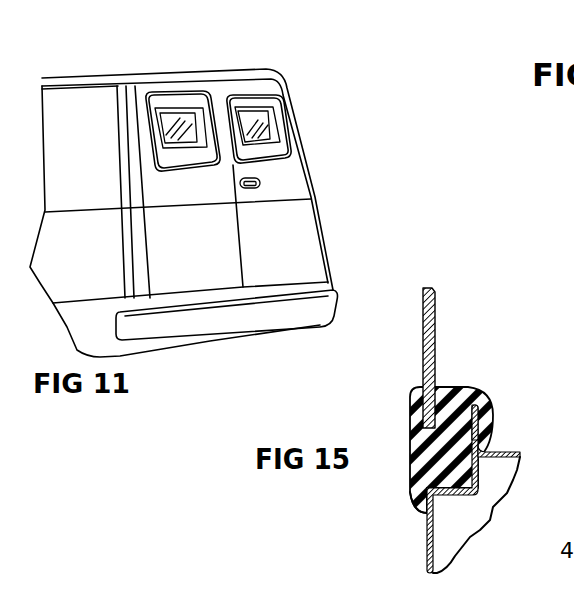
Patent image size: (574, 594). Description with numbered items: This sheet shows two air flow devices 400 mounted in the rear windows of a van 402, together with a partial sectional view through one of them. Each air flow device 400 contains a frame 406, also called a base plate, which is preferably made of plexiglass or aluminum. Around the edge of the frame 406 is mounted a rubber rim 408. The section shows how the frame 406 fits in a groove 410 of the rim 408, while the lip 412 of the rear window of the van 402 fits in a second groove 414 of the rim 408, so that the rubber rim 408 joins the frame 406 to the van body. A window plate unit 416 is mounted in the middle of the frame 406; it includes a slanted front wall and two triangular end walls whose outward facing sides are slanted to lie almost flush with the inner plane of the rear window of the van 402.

In FIG. 11, the air flow device 400 is at (252, 99).
In FIG. 11, the van 402 is at (298, 240).
In FIG. 15, the van 402 is at (493, 489).
In FIG. 11, the frame 406 is at (280, 152).
In FIG. 15, the frame 406 is at (428, 343).
In FIG. 11, the rubber rim 408 is at (292, 157).
In FIG. 15, the rubber rim 408 is at (422, 462).
In FIG. 15, the groove 410 is at (422, 407).
In FIG. 15, the lip 412 is at (488, 437).
In FIG. 15, the groove 414 is at (483, 408).
In FIG. 11, the window plate unit 416 is at (265, 123).